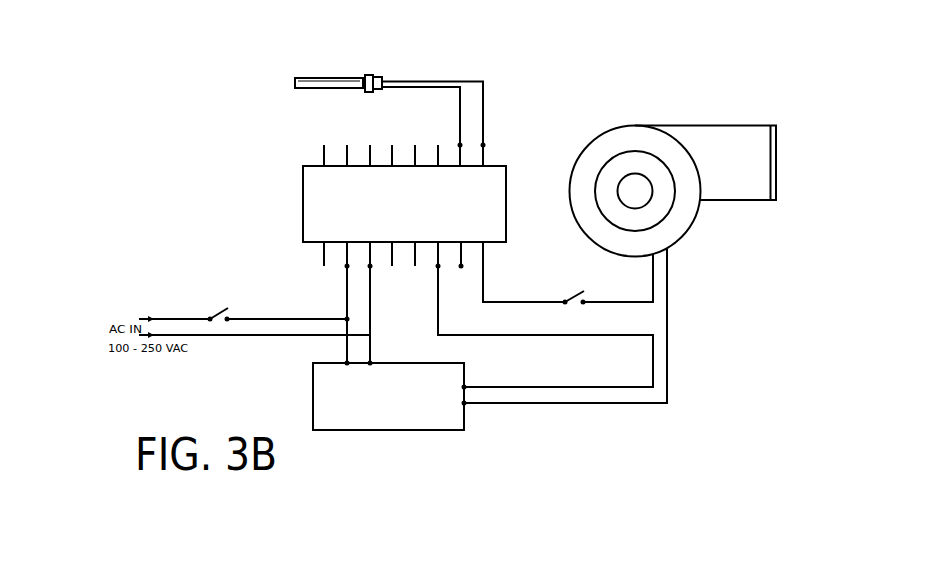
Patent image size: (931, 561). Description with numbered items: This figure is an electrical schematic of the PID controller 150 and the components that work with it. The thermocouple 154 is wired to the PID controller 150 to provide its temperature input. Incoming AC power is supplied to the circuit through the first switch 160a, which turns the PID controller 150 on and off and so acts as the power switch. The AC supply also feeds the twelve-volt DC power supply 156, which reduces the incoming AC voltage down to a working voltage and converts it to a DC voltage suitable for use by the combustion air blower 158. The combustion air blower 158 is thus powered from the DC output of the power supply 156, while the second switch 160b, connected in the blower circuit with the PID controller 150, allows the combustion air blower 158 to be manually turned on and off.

The PID controller 150 is at (312, 207).
The thermocouple 154 is at (296, 81).
The 12V DC power supply 156 is at (432, 402).
The combustion air blower 158 is at (688, 187).
The first switch 160a is at (210, 315).
The second switch 160b is at (577, 303).